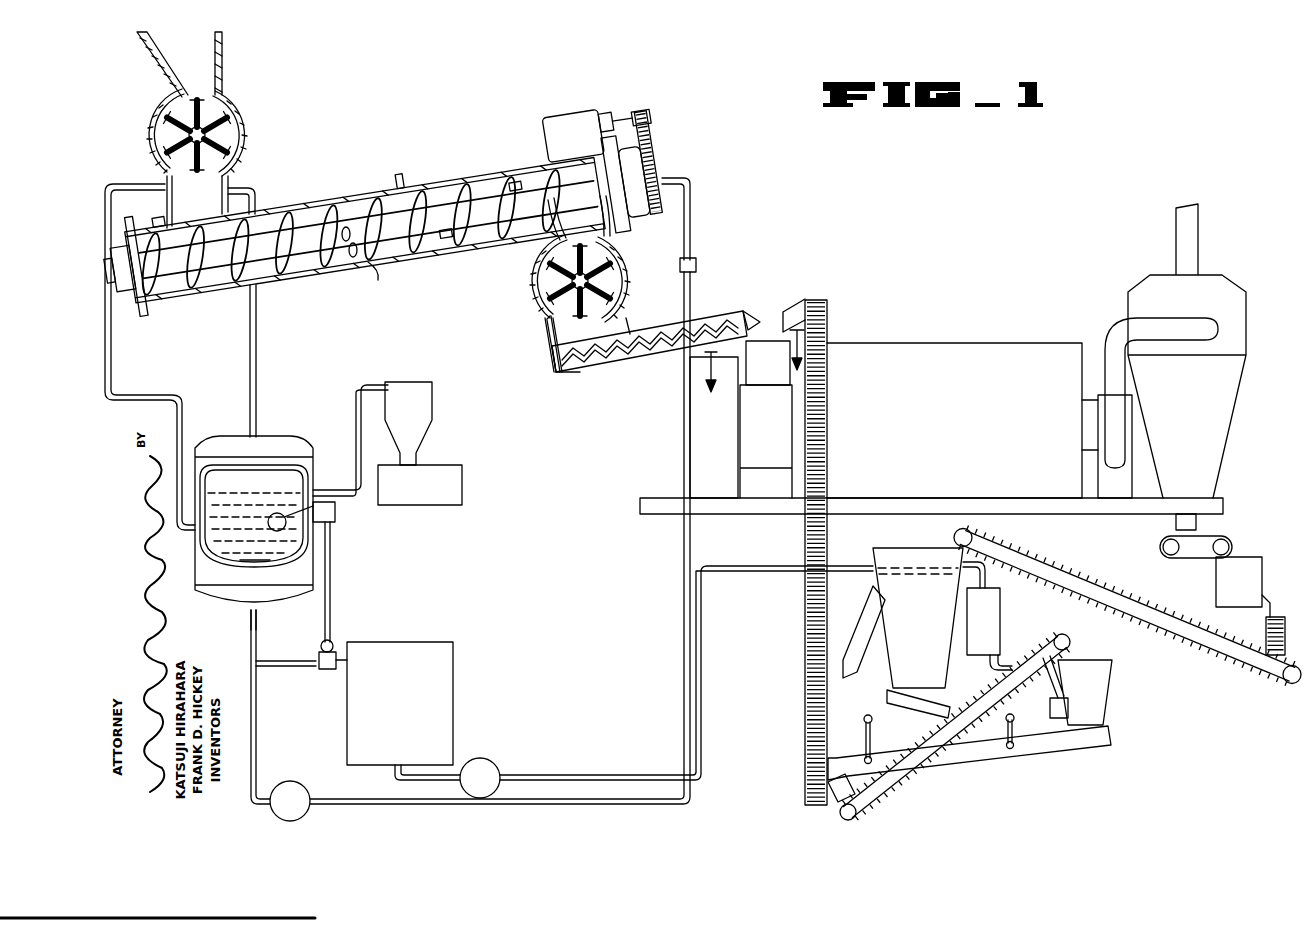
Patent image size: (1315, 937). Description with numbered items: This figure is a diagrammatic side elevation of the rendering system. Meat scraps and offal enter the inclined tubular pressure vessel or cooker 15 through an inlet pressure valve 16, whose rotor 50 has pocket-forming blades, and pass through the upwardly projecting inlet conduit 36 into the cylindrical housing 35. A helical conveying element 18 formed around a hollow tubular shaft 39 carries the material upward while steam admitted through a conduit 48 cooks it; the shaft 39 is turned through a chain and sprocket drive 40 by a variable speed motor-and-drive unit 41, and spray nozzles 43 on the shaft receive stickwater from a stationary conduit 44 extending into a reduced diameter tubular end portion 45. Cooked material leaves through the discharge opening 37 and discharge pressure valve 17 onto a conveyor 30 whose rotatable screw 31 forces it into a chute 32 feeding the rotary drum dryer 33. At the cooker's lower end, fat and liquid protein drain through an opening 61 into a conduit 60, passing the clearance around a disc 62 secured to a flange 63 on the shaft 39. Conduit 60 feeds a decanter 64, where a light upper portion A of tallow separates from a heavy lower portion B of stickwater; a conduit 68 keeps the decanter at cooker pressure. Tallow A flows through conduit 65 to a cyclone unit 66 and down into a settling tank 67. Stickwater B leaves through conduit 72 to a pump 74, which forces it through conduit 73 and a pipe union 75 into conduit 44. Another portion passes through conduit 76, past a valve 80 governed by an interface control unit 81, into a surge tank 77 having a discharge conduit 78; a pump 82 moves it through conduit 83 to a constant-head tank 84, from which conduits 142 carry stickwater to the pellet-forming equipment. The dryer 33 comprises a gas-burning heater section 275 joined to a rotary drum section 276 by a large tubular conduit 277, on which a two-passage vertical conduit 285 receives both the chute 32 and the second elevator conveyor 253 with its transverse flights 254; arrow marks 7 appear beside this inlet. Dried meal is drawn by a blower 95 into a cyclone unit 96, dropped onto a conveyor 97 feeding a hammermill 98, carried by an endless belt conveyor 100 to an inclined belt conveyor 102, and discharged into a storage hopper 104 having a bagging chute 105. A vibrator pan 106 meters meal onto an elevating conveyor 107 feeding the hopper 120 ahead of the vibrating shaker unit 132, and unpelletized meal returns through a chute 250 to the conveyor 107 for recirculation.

The inclined tubular pressure vessel 15 is at (462, 168).
The inlet pressure valve 16 is at (224, 100).
The discharge pressure valve 17 is at (546, 284).
The helical conveying element 18 is at (352, 200).
The conveyor 30 is at (563, 374).
The rotatable screw 31 is at (626, 355).
The chute 32 is at (756, 333).
The rotary drum dryer 33 is at (962, 342).
The cylindrical housing 35 is at (374, 266).
The inlet conduit 36 is at (234, 188).
The discharge opening 37 is at (548, 345).
The tubular shaft 39 is at (296, 252).
The chain and sprocket drive 40 is at (660, 146).
The variable speed motor-and-drive unit 41 is at (566, 112).
The spray nozzles 43 is at (520, 218).
The conduit 44 is at (691, 192).
The reduced diameter tubular end portion 45 is at (662, 176).
The steam conduit 48 is at (404, 178).
The rotor 50 is at (212, 132).
The conduit 60 is at (118, 372).
The opening 61 is at (160, 224).
The disc 62 is at (160, 290).
The flange 63 is at (196, 285).
The decanter 64 is at (246, 440).
The conduit 65 is at (356, 426).
The cyclone unit 66 is at (407, 396).
The settling tank 67 is at (432, 498).
The conduit 68 is at (257, 352).
The conduit 72 is at (258, 630).
The conduit 73 is at (683, 550).
The pump 74 is at (286, 792).
The pipe union 75 is at (697, 262).
The conduit 76 is at (288, 668).
The surge tank 77 is at (412, 718).
The discharge conduit 78 is at (396, 780).
The valve 80 is at (325, 672).
The interface control unit 81 is at (336, 516).
The pump 82 is at (488, 772).
The conduit 83 is at (582, 776).
The tank 84 is at (998, 622).
The blower 95 is at (1100, 420).
The cyclone unit 96 is at (1198, 398).
The conveyor 97 is at (1176, 541).
The hammermill 98 is at (1218, 580).
The endless belt conveyor 100 is at (1268, 634).
The upwardly inclined endless belt conveyor 102 is at (1048, 558).
The storage hopper 104 is at (934, 628).
The chute 105 is at (874, 620).
The pan 106 is at (887, 696).
The elevating conveyor 107 is at (942, 722).
The hopper 120 is at (1096, 685).
The vibrating shaker unit 132 is at (1050, 741).
The conduits 142 is at (1005, 670).
The chute 250 is at (830, 800).
The second elevator conveyor 253 is at (806, 522).
The transverse flights 254 is at (828, 402).
The gas-burning heater section 275 is at (732, 438).
The rotary drum section 276 is at (968, 426).
The tubular conduit 277 is at (780, 456).
The two-passage vertically extending conduit 285 is at (760, 378).
The flow arrow 7 is at (755, 348).
The upper portion of fat or tallow A is at (266, 490).
The lower portion of aqueous protein B is at (250, 562).